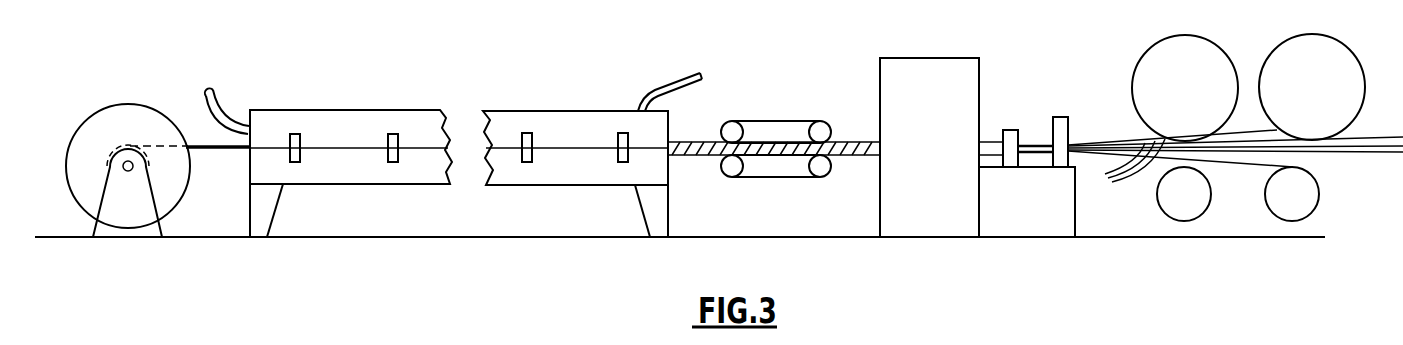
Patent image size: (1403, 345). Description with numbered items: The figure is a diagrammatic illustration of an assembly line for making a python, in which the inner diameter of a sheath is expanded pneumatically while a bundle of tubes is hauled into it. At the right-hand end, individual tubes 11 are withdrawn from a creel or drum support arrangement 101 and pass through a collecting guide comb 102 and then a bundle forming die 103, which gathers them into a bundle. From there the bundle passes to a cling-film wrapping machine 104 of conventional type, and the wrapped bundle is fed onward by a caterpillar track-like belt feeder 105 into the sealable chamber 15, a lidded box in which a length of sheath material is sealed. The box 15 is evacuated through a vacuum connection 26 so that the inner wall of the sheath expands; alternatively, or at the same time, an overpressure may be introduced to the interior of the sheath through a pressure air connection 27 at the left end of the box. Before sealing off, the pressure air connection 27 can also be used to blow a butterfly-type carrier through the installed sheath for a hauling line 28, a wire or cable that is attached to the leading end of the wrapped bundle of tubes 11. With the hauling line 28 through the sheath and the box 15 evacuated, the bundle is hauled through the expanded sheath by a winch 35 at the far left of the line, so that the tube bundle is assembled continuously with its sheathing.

The winch 35 is at (108, 104).
The hauling line 28 is at (222, 149).
The pressure air connection 27 is at (222, 103).
The sealable chamber 15 is at (528, 110).
The vacuum connection 26 is at (667, 80).
The caterpillar track-like belt feeder 105 is at (777, 177).
The cling-film wrapping machine 104 is at (920, 240).
The bundle forming die 103 is at (1027, 90).
The collecting guide comb 102 is at (1062, 116).
The tubes 11 is at (1135, 165).
The creel or drum support arrangement 101 is at (1305, 58).